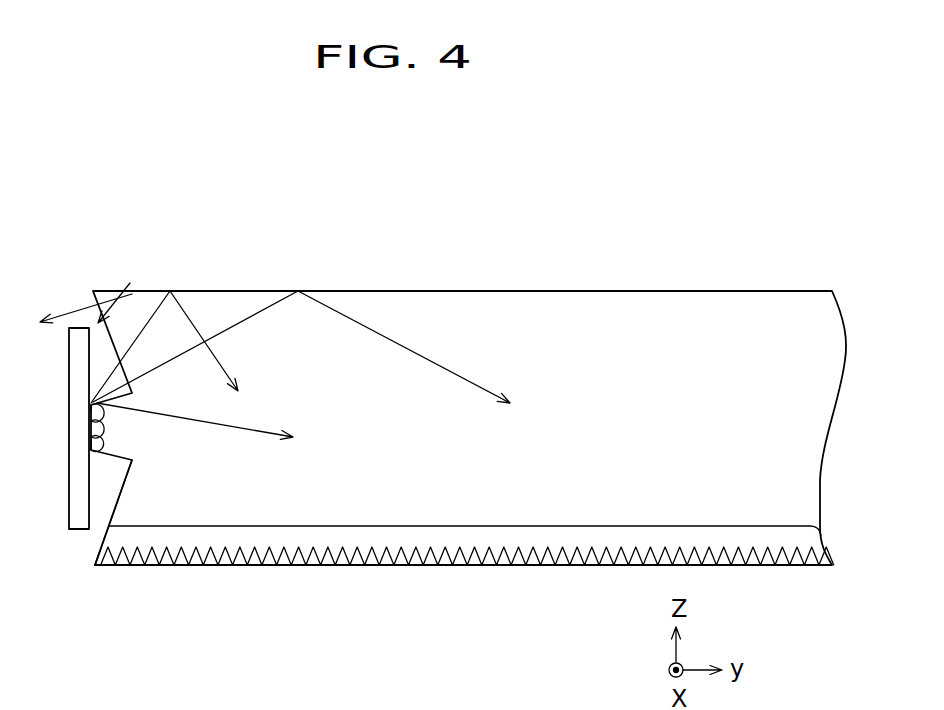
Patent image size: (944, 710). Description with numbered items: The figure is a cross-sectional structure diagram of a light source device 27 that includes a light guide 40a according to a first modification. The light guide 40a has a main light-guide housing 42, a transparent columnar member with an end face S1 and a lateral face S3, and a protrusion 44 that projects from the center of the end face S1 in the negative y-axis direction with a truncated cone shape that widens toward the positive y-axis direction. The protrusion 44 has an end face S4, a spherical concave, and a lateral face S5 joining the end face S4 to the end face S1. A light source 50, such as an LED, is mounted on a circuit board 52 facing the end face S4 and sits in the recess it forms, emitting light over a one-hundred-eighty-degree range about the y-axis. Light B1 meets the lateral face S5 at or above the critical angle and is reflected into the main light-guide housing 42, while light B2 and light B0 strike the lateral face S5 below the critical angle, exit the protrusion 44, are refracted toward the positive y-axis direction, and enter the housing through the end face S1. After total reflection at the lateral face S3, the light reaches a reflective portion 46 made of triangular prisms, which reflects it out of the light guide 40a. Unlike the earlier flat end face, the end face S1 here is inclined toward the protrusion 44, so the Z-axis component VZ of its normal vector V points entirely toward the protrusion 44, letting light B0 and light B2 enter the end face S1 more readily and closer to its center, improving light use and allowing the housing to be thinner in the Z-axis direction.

The light source device 27 is at (89, 191).
The main light-guide housing 42 is at (660, 291).
The reflective portion 46 is at (421, 526).
The light source 50 is at (104, 424).
The circuit board 52 is at (69, 482).
The protrusion 44 is at (110, 462).
The end face S1 is at (97, 557).
The lateral face S3 is at (503, 291).
The end face S4 is at (90, 443).
The lateral face S5 is at (97, 395).
The light guide 40a is at (592, 276).
The light B0 is at (178, 304).
The light B1 is at (199, 424).
The light B2 is at (467, 373).
The normal vector V is at (85, 306).
The Z-axis component VZ is at (122, 289).